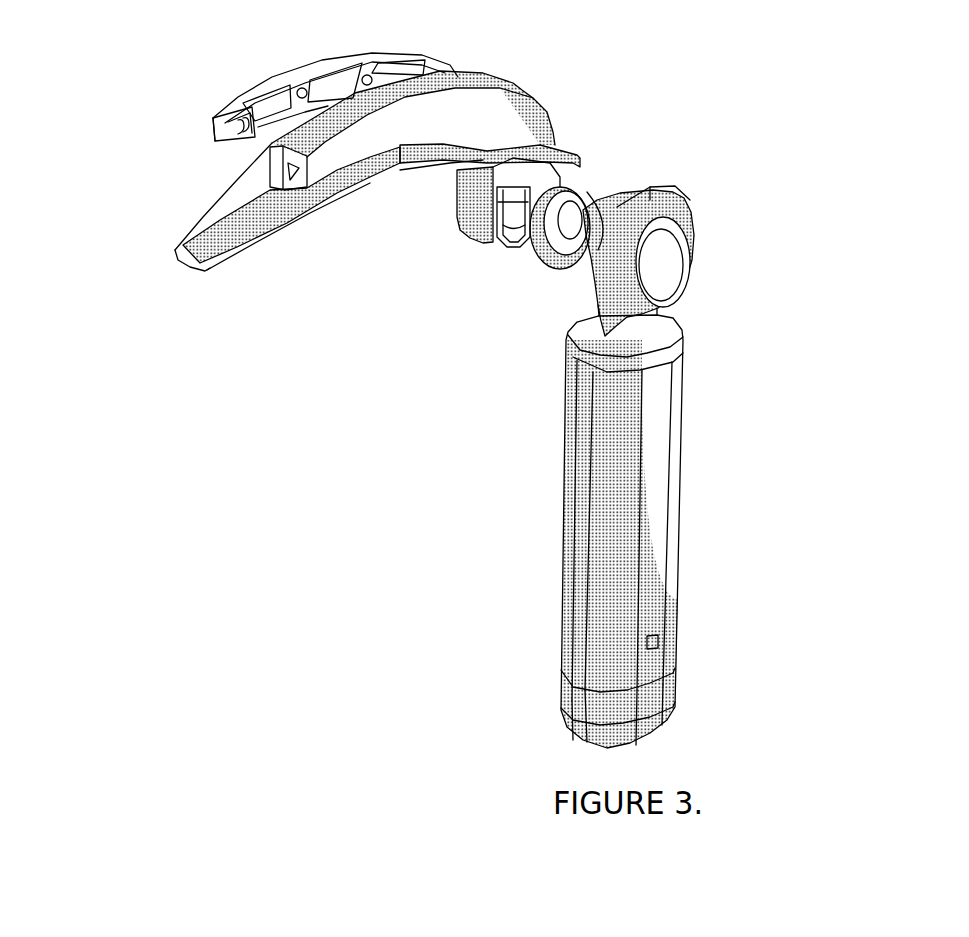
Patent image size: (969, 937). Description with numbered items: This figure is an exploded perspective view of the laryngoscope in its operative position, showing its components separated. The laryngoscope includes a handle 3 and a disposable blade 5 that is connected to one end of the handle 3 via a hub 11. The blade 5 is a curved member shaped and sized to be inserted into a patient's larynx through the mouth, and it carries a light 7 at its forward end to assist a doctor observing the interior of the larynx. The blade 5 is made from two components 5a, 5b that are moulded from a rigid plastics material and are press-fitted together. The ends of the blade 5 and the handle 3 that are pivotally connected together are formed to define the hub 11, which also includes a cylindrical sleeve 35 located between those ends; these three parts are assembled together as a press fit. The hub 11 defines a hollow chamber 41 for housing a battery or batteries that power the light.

The handle 3 is at (645, 467).
The disposable blade 5 is at (357, 145).
The blade component 5a is at (345, 62).
The blade component 5b is at (427, 118).
The light 7 is at (277, 170).
The hub 11 is at (602, 177).
The cylindrical sleeve 35 is at (545, 260).
The hollow chamber 41 is at (495, 258).